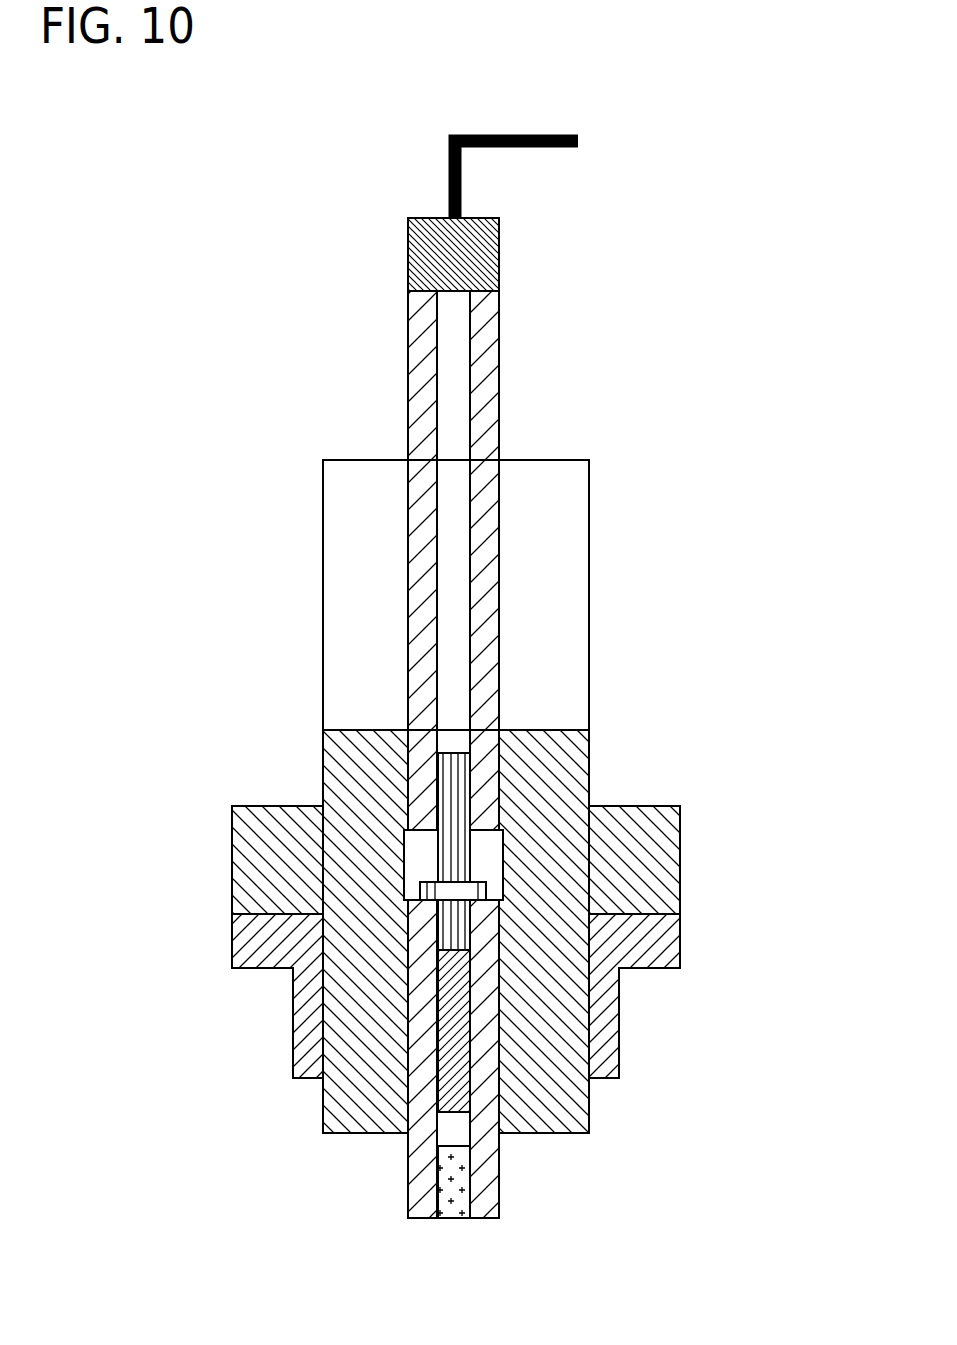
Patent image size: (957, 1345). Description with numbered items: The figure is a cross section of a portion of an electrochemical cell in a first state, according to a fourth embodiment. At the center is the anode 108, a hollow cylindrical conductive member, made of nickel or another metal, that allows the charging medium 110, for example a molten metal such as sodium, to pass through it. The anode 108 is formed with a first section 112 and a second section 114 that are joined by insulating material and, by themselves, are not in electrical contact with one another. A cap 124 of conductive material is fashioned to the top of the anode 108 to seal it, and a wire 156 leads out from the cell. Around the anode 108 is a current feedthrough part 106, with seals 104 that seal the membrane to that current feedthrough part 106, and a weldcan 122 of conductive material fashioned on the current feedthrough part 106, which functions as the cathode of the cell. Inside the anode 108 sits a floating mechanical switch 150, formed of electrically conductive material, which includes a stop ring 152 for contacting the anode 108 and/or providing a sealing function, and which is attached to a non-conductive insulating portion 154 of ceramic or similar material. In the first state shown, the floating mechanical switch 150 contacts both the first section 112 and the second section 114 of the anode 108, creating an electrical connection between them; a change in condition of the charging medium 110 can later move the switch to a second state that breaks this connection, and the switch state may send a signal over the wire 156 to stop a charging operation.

The seals 104 is at (665, 943).
The current feedthrough part 106 is at (643, 858).
The anode 108 is at (487, 342).
The charging medium 110 is at (455, 1183).
The first section 112 is at (483, 453).
The second section 114 is at (487, 991).
The weldcan 122 is at (567, 495).
The cap 124 is at (473, 245).
The floating mechanical switch 150 is at (452, 793).
The stop ring 152 is at (430, 890).
The non-conductive insulating portion 154 is at (452, 1018).
The wire 156 is at (538, 133).